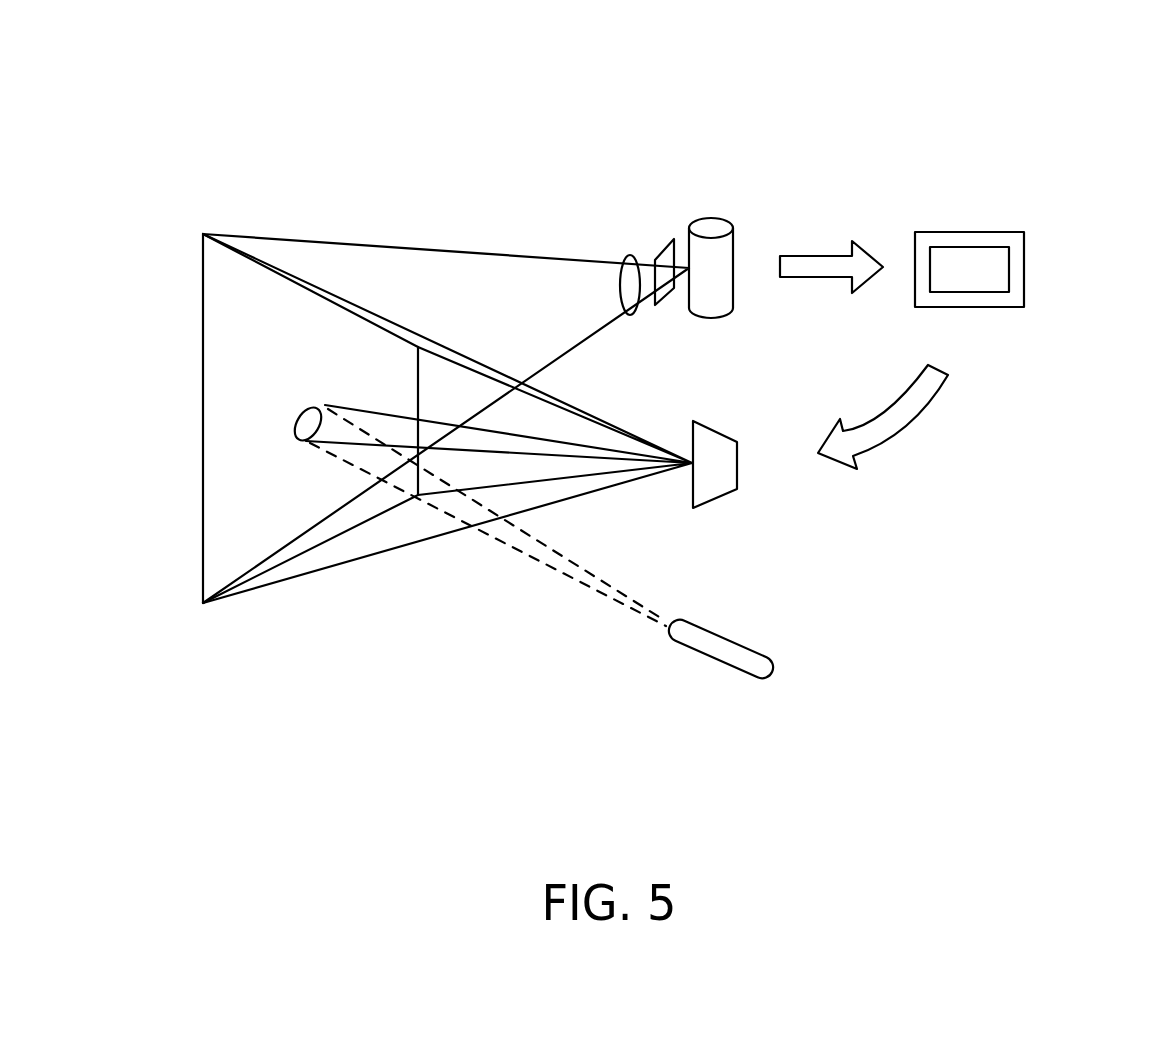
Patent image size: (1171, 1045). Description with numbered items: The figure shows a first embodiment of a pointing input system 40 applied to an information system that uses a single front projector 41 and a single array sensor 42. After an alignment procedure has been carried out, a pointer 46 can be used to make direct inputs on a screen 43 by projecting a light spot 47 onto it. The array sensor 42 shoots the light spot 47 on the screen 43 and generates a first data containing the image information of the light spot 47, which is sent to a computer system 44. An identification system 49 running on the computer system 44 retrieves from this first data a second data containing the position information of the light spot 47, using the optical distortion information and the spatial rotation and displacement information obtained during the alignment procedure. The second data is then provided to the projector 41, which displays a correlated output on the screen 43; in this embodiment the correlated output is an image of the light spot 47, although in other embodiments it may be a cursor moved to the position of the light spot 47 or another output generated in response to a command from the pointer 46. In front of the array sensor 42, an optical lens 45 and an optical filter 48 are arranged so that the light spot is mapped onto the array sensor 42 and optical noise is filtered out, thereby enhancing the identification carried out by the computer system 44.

The pointing input system 40 is at (1072, 143).
The front projector 41 is at (728, 487).
The array sensor 42 is at (727, 252).
The screen 43 is at (210, 516).
The computer system 44 is at (968, 231).
The optical lens 45 is at (627, 258).
The pointer 46 is at (760, 663).
The light spot 47 is at (308, 418).
The optical filter 48 is at (662, 298).
The identification system 49 is at (988, 297).